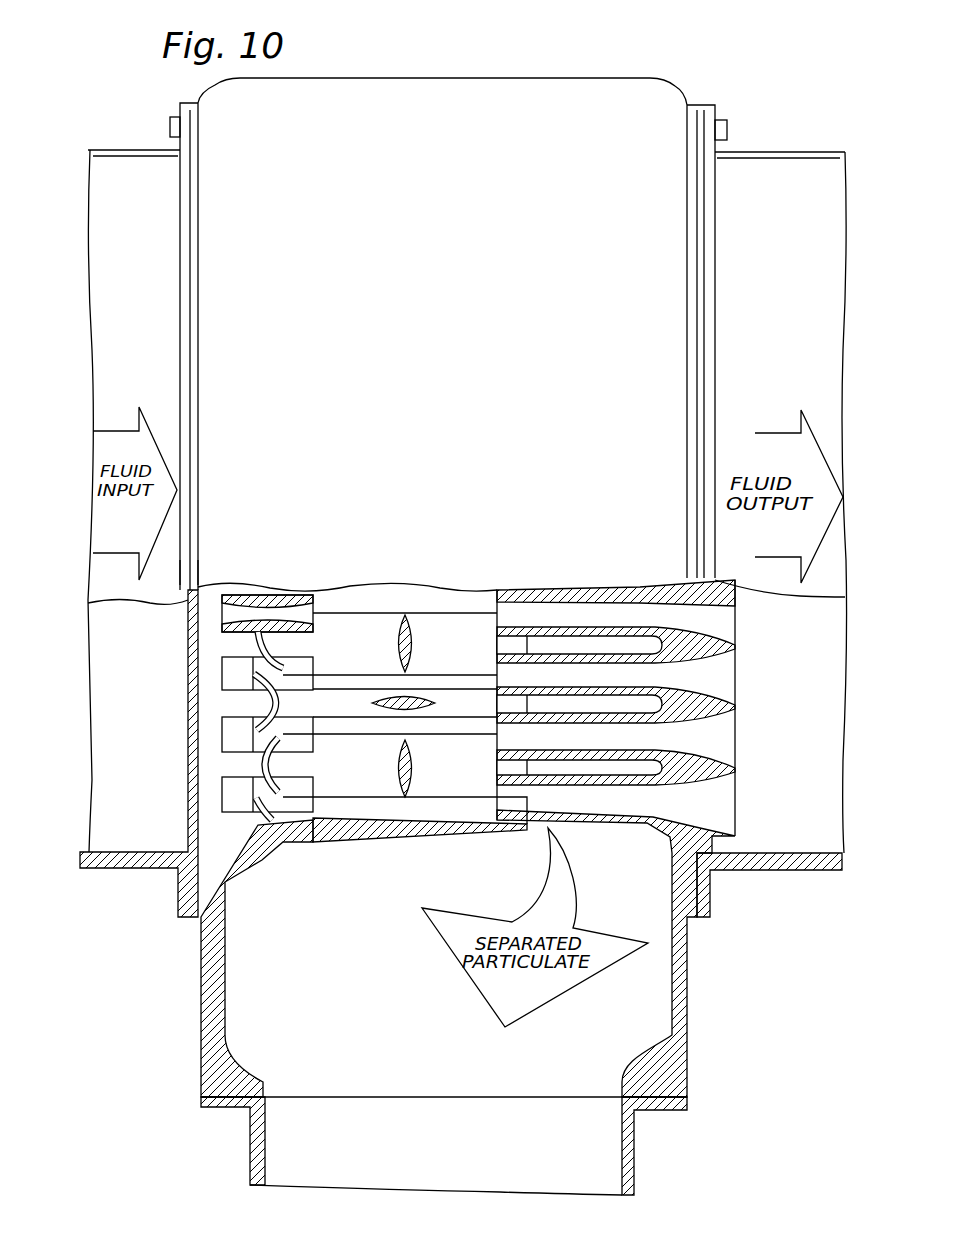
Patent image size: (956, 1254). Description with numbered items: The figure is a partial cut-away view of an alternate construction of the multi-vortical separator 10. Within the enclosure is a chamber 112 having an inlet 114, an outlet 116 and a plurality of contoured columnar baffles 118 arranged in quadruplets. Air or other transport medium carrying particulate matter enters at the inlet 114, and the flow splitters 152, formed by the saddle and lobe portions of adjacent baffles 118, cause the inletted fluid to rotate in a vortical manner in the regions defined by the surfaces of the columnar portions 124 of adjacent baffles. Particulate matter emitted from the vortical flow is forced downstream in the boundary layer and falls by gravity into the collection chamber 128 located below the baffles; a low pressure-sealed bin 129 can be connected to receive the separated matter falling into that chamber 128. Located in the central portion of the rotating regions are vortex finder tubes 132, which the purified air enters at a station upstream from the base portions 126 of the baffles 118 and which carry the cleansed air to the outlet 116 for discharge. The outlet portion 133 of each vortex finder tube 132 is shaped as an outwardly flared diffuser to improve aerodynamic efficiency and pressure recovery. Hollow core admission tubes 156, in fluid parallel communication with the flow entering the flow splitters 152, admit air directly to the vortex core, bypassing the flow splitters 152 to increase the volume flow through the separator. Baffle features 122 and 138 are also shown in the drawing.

The fluid conduit apparatus 10 is at (698, 96).
The chamber 112 is at (460, 602).
The inlet 114 is at (168, 530).
The outlet 116 is at (735, 682).
The contoured columnar baffles 118 is at (320, 775).
The curved baffle 122 is at (258, 730).
The columnar portions 124 is at (440, 797).
The base portions 126 is at (527, 770).
The chamber 128 is at (517, 1062).
The low pressure-sealed bin 129 is at (470, 1150).
The vortex finder tubes 132 is at (496, 620).
The outlet portion 133 is at (735, 712).
The lower baffle 138 is at (262, 812).
The flow splitters 152 is at (262, 672).
The core admission tubes 156 is at (263, 608).